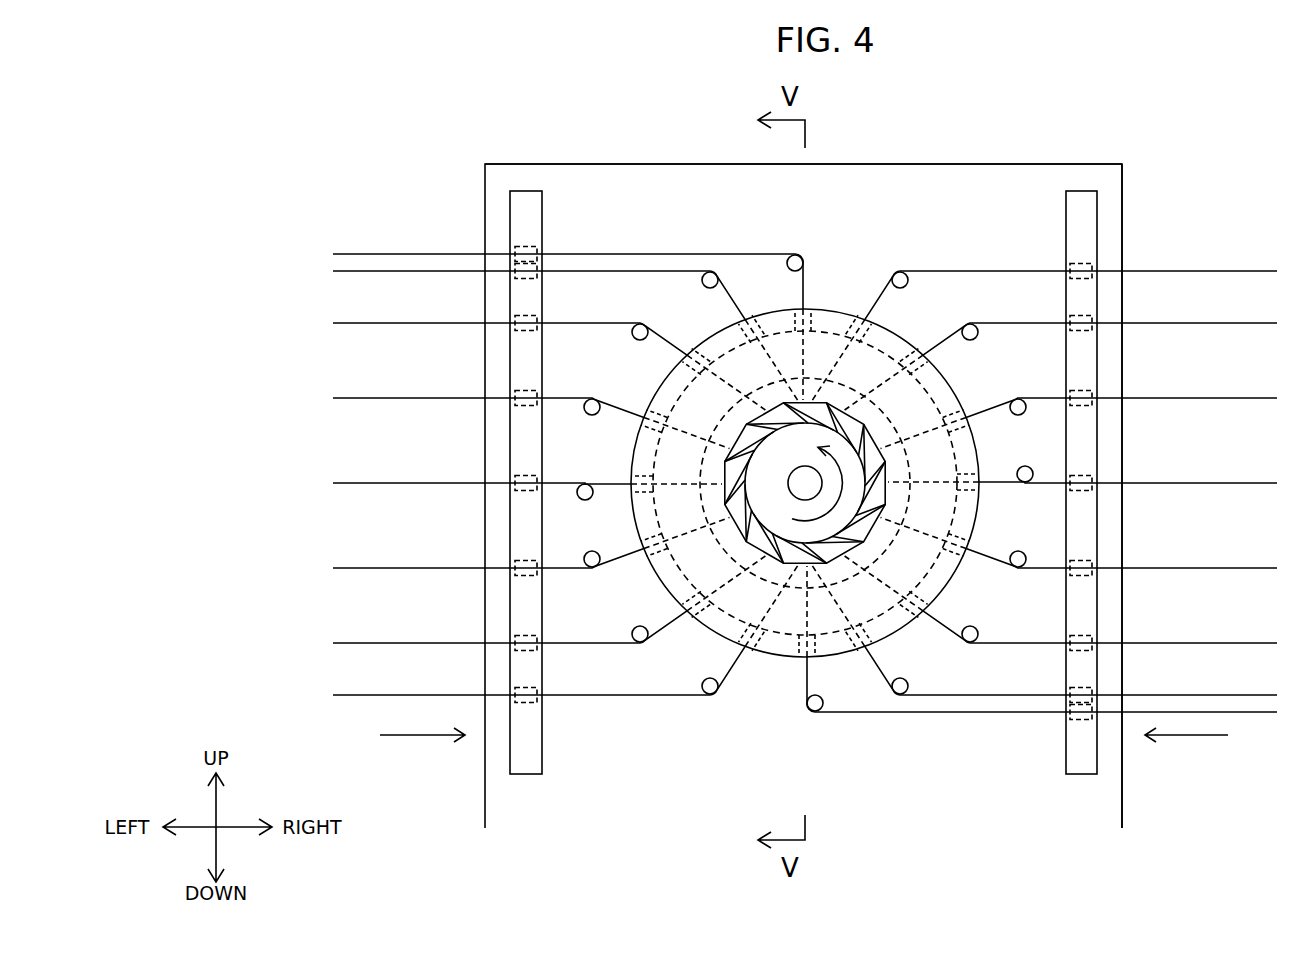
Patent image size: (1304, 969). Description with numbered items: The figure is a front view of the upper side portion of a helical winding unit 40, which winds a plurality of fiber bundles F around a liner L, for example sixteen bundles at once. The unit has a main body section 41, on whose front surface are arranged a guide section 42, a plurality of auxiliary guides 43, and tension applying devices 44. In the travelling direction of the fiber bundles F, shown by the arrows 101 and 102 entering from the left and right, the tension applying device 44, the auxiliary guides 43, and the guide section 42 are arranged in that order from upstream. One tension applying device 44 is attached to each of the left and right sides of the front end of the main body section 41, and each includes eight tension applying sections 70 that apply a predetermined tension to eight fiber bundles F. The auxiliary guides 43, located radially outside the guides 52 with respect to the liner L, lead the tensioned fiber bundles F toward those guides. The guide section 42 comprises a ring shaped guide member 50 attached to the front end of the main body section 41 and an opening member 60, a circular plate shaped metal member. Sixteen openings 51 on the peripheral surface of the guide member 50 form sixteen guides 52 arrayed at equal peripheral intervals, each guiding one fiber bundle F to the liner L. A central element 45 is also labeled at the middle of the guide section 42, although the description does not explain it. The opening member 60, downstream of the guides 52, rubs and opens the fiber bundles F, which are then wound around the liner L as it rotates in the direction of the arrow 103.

The helical winding unit 40 is at (496, 150).
The main body section 41 is at (1005, 172).
The guide section 42 is at (641, 181).
The auxiliary guides 43 is at (711, 695).
The tension applying device 44 is at (517, 210).
The blade 45 is at (820, 401).
The guide member 50 is at (773, 303).
The openings 51 is at (1003, 572).
The guides 52 is at (968, 582).
The opening member 60 is at (890, 375).
The tension applying sections 70 is at (522, 702).
The arrow 101 is at (424, 742).
The arrow 102 is at (1183, 742).
The arrow 103 is at (852, 530).
The fiber bundle F is at (1253, 271).
The liner L is at (792, 518).